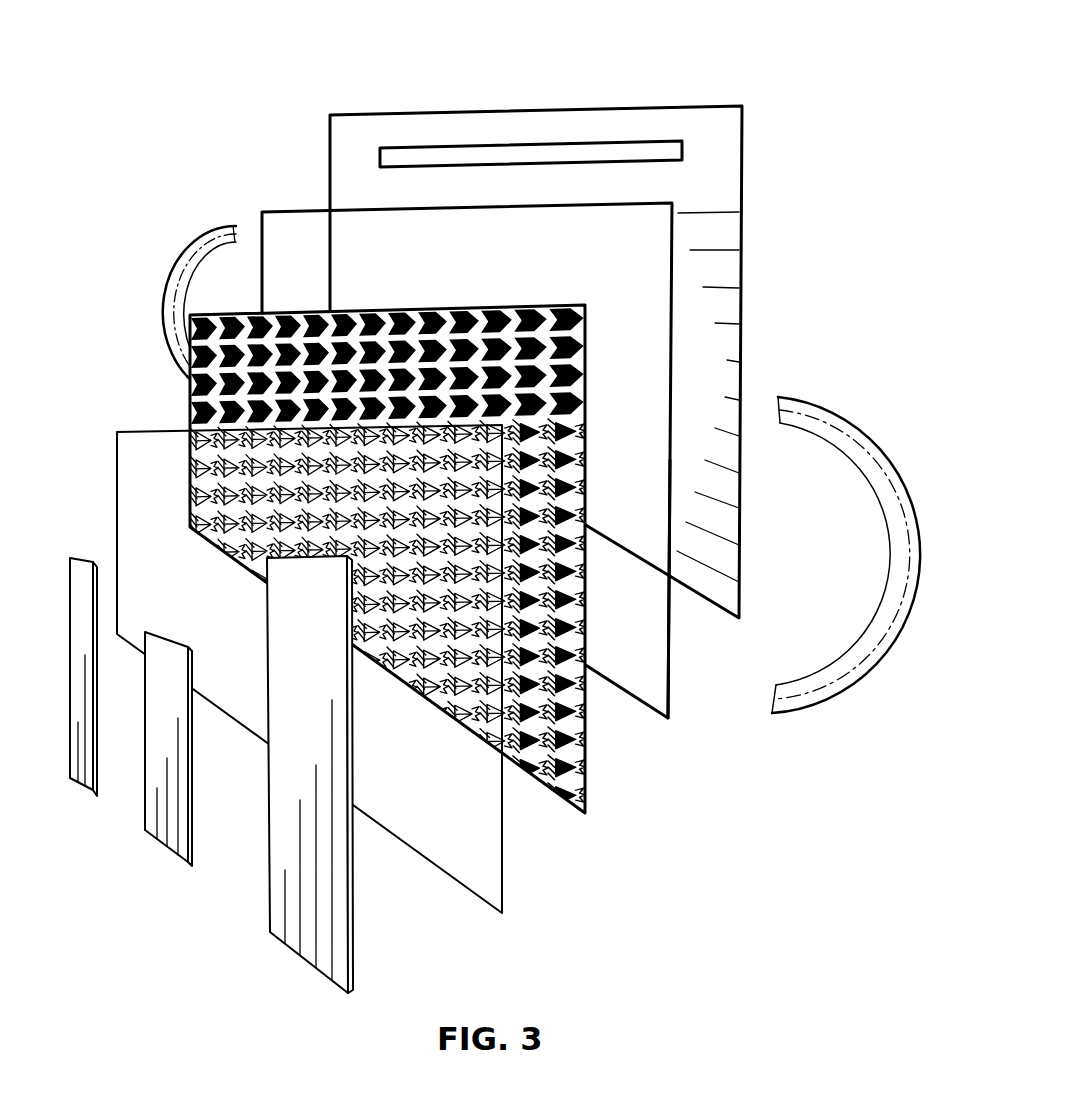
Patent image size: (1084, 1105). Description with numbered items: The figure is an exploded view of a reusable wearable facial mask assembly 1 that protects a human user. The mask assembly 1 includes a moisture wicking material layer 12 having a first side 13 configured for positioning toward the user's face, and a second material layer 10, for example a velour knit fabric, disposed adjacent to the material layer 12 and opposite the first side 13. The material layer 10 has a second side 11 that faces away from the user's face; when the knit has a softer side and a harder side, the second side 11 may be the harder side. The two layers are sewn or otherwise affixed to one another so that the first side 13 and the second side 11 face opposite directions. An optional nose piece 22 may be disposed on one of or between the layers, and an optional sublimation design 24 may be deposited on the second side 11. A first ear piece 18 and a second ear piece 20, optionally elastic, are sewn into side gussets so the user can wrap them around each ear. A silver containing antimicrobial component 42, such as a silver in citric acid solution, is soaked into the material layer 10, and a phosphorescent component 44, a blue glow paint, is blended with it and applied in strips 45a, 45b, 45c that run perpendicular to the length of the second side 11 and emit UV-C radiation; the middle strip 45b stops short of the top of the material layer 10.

The mask assembly 1 is at (762, 51).
The material layer 10 is at (298, 227).
The second side 11 is at (652, 667).
The material layer 12 is at (648, 128).
The first side 13 is at (742, 232).
The first ear piece 18 is at (213, 225).
The second ear piece 20 is at (890, 438).
The nose piece 22 is at (455, 160).
The sublimation design 24 is at (190, 400).
The silver containing antimicrobial component 42 is at (115, 505).
The phosphorescent component 44 is at (90, 592).
The first strip 45a is at (98, 622).
The middle strip 45b is at (193, 816).
The third strip 45c is at (355, 956).